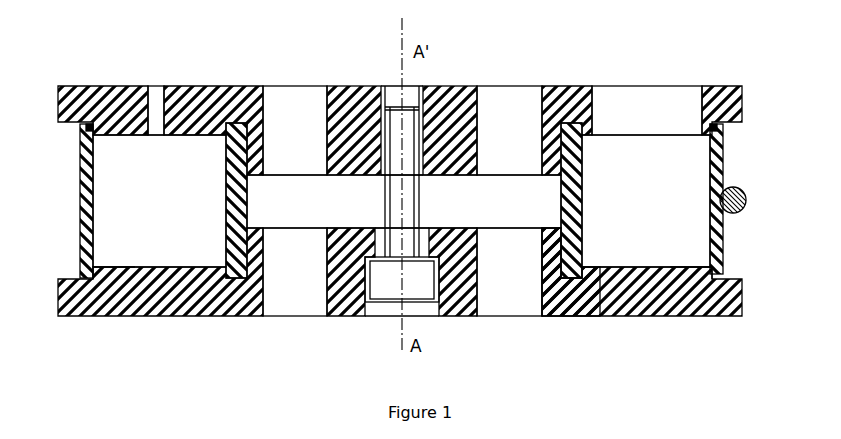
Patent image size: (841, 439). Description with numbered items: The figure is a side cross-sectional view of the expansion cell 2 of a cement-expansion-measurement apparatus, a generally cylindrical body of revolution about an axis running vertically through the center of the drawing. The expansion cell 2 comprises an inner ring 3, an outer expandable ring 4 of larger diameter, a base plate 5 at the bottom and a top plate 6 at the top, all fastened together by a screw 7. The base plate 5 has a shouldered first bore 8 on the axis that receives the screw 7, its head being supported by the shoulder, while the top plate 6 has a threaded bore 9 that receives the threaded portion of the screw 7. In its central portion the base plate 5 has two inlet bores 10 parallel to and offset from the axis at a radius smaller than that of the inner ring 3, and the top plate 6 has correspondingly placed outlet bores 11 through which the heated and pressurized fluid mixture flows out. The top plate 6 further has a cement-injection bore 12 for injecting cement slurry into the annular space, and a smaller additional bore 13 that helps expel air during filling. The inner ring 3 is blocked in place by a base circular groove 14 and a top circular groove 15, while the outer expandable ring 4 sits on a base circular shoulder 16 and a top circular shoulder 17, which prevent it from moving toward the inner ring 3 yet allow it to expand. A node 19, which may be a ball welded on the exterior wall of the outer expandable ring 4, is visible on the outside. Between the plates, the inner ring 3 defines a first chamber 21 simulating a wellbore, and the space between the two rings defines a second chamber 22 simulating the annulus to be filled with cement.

The expansion cell 2 is at (101, 52).
The inner ring 3 is at (228, 198).
The outer expandable ring 4 is at (82, 236).
The base plate 5 is at (703, 300).
The top plate 6 is at (718, 91).
The screw 7 is at (393, 221).
The first bore 8 is at (388, 308).
The threaded bore 9 is at (395, 95).
The inlet bores 10 is at (295, 303).
The outlet bores 11 is at (285, 97).
The cement-injection bore 12 is at (632, 96).
The additional bore 13 is at (153, 91).
The base circular groove 14 is at (218, 312).
The top circular groove 15 is at (248, 90).
The base circular shoulder 16 is at (112, 267).
The top circular shoulder 17 is at (85, 126).
The node 19 is at (748, 200).
The first chamber 21 is at (492, 213).
The second chamber 22 is at (117, 172).